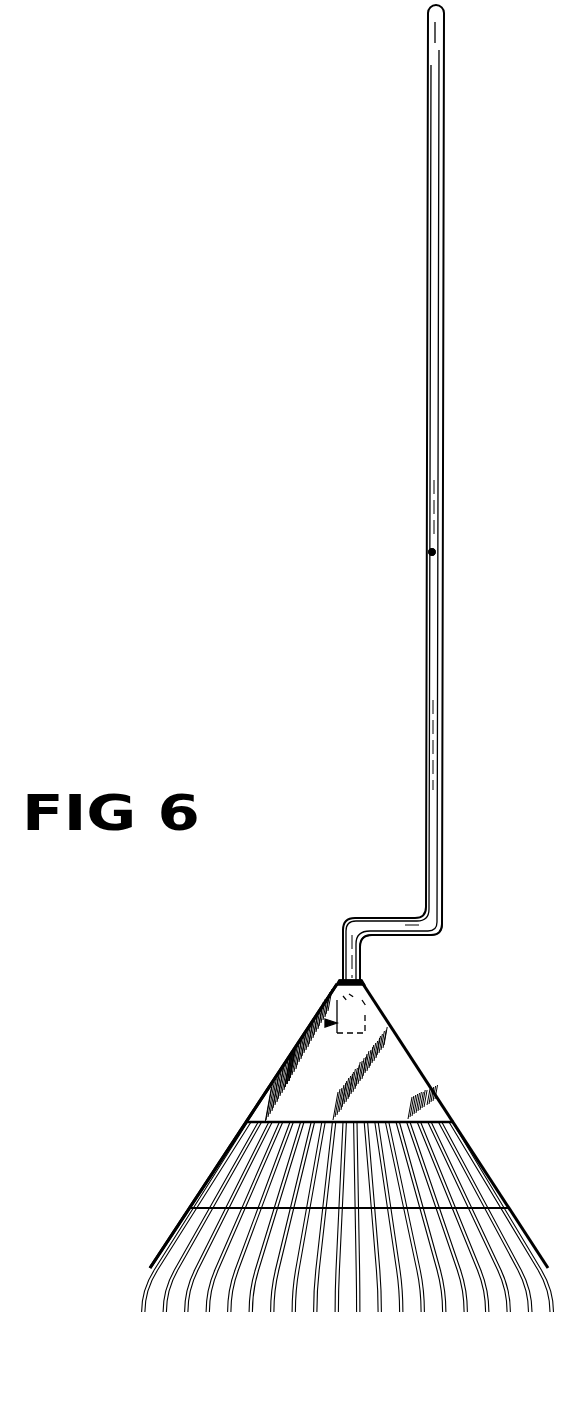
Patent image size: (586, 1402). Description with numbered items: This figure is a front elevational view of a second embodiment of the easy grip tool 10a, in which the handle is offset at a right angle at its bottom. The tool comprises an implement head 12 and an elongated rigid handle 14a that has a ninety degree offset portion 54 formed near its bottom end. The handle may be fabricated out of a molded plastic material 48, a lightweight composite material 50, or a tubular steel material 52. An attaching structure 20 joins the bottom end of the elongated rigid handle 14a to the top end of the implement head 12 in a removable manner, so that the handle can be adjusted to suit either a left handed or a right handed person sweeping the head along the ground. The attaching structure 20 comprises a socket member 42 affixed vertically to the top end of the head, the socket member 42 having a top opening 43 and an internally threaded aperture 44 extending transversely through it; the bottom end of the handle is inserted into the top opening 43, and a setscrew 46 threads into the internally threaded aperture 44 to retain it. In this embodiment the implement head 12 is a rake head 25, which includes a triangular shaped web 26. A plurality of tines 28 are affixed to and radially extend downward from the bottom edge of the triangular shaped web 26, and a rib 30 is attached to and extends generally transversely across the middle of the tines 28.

The easy grip tool 10a is at (368, 448).
The elongated rigid handle 14a is at (446, 331).
The molded plastic material 48 is at (435, 552).
The lightweight composite material 50 is at (432, 552).
The tubular steel material 52 is at (432, 552).
The ninety degree offset portion 54 is at (378, 927).
The top opening 43 is at (337, 982).
The setscrew 46 is at (322, 990).
The internally threaded aperture 44 is at (372, 1000).
The attaching structure 20 is at (305, 1017).
The socket member 42 is at (375, 1030).
The implement head 12 is at (439, 1099).
The rake head 25 is at (269, 1090).
The triangular shaped web 26 is at (298, 1097).
The rib 30 is at (462, 1208).
The tines 28 is at (172, 1236).